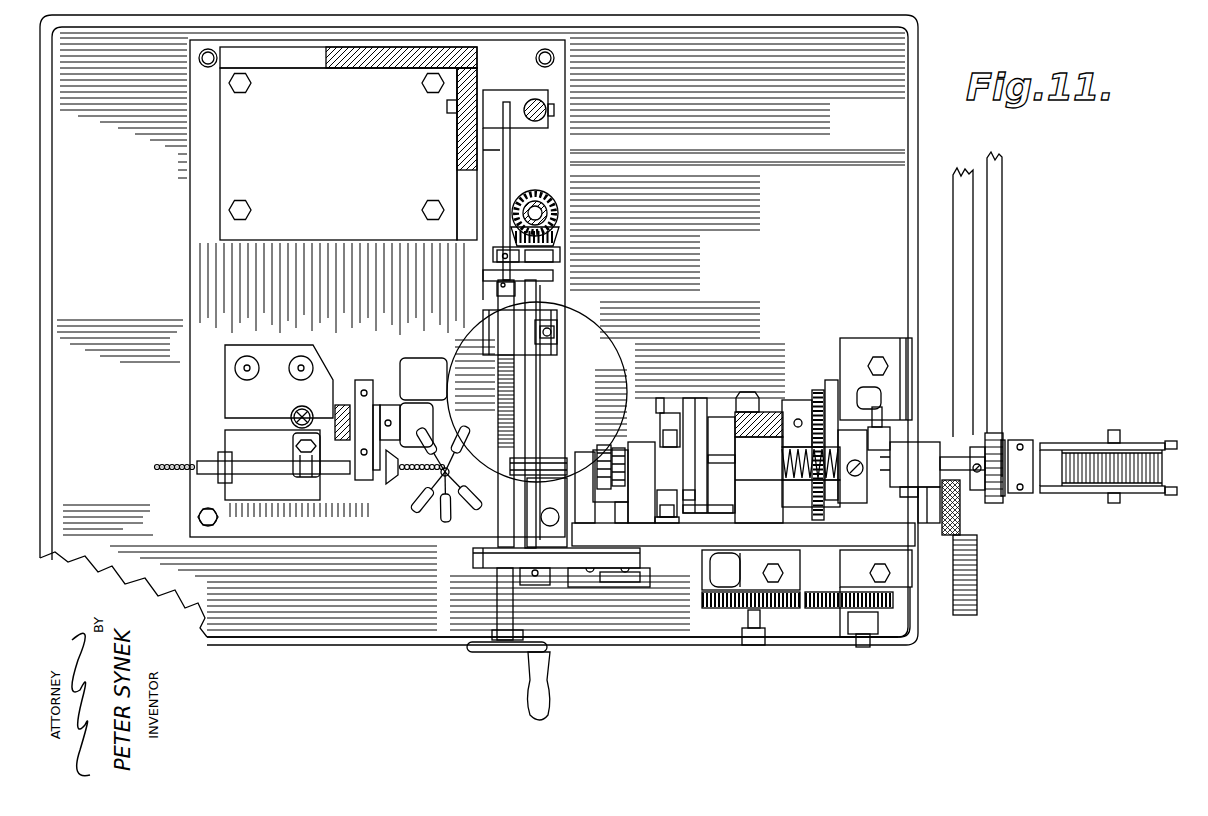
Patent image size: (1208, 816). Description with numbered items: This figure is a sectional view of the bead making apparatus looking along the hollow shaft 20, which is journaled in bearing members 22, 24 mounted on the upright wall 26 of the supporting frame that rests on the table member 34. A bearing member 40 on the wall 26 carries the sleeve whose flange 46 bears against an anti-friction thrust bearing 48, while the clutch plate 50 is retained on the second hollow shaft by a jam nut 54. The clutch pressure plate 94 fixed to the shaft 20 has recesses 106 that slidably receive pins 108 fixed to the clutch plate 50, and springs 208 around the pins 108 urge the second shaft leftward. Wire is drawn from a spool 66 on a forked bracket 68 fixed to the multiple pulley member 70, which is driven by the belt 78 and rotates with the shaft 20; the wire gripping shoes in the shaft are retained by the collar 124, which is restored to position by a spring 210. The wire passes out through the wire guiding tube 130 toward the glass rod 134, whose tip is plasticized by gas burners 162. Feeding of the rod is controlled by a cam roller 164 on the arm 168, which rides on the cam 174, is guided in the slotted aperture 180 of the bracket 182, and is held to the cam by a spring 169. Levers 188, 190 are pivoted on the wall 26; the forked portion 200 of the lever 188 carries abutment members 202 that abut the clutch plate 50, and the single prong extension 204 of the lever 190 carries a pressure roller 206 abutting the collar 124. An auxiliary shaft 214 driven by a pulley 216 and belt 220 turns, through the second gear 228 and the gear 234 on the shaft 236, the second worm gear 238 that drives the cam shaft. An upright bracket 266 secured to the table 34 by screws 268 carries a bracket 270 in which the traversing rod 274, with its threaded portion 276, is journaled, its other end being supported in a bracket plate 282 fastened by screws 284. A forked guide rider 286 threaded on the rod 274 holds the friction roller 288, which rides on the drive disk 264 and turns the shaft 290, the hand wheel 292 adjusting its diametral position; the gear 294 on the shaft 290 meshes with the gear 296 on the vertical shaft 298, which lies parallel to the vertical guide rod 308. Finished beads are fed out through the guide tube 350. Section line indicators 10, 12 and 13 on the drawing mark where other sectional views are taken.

The section line 10- 10 is at (540, 294).
The section line 12- 12 is at (106, 475).
The section line 13- 13 is at (155, 297).
The hollow shaft 20 is at (957, 463).
The bearing member 22 is at (928, 483).
The bearing member 24 is at (759, 480).
The upright wall 26 is at (743, 534).
The table member 34 is at (318, 618).
The bearing member 40 is at (641, 482).
The outwardly extending flange 46 is at (601, 447).
The anti-friction thrust bearing 48 is at (617, 448).
The clutch plate 50 is at (677, 417).
The jam nut 54 is at (692, 427).
The spool 66 is at (1142, 452).
The forked bracket 68 is at (1047, 445).
The multiple pulley member 70 is at (1003, 503).
The belt 78 is at (993, 213).
The clutch pressure plate 94 is at (720, 420).
The grooves or recesses 106 is at (690, 510).
The pins 108 is at (715, 457).
The collar 124 is at (852, 466).
The wire guiding tube 130 is at (552, 463).
The glass rod 134 is at (430, 478).
The gas burners 162 is at (445, 522).
The cam roller 164 is at (365, 413).
The arm 168 is at (342, 403).
The spring 169 is at (293, 412).
The cam 174 is at (380, 405).
The slotted aperture 180 is at (338, 460).
The bracket 182 is at (325, 378).
The lever 188 is at (661, 410).
The lever 190 is at (888, 418).
The forked portion 200 is at (657, 502).
The abutment members 202 is at (670, 515).
The single prong extension 204 is at (880, 425).
The pressure roller 206 is at (888, 440).
The springs 208 is at (695, 497).
The spring 210 is at (811, 455).
The auxiliary shaft 214 is at (832, 417).
The pulley 216 is at (978, 580).
The belt 220 is at (960, 192).
The second gear 228 is at (862, 632).
The gear 234 is at (723, 610).
The shaft 236 is at (752, 645).
The second worm gear 238 is at (777, 412).
The drive disk 264 is at (597, 332).
The upright bracket 266 is at (230, 149).
The screws 268 is at (240, 210).
The bracket 270 is at (490, 207).
The traversing rod 274 is at (500, 597).
The threaded portion 276 is at (500, 377).
The bracket plate 282 is at (563, 568).
The screws 284 is at (623, 575).
The forked guide rider 286 is at (487, 325).
The friction roller 288 is at (560, 335).
The shaft 290 is at (538, 383).
The hand wheel 292 is at (542, 697).
The gear 294 is at (557, 235).
The gear 296 is at (548, 195).
The vertical shaft 298 is at (543, 213).
The vertical guide rod 308 is at (542, 107).
The guide tube 350 is at (267, 472).